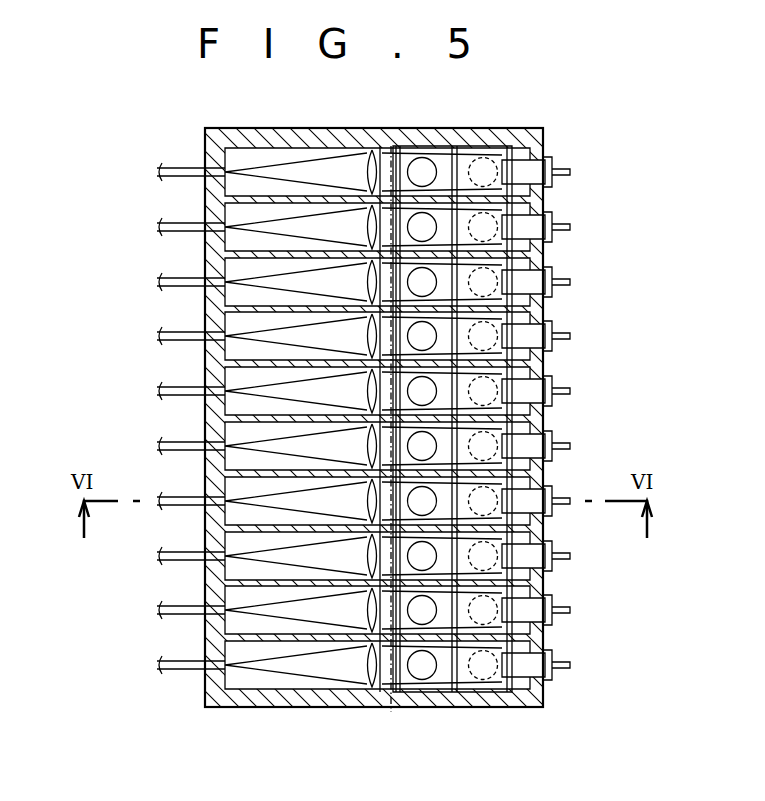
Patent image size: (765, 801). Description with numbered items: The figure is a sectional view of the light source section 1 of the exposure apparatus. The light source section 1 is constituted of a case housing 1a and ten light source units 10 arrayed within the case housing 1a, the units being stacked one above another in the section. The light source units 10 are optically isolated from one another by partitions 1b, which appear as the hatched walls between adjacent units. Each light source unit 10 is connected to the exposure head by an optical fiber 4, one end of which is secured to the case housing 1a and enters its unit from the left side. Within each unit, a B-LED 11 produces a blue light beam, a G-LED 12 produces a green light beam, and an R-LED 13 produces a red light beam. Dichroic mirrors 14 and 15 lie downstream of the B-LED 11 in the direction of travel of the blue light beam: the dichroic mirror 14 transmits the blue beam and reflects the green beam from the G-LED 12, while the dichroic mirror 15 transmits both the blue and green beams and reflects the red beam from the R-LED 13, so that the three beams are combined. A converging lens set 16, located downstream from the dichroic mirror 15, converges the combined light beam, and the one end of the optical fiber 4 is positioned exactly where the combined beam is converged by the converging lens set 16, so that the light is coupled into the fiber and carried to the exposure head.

The light source section 1 is at (400, 430).
The case housing 1a is at (377, 133).
The partition 1b is at (292, 642).
The optical fiber 4 is at (182, 670).
The light source unit 10 is at (238, 708).
The B-LED 11 is at (556, 678).
The G-LED 12 is at (480, 662).
The R-LED 13 is at (406, 697).
The dichroic mirror 14 is at (529, 653).
The dichroic mirror 15 is at (389, 712).
The converging lens set 16 is at (366, 684).